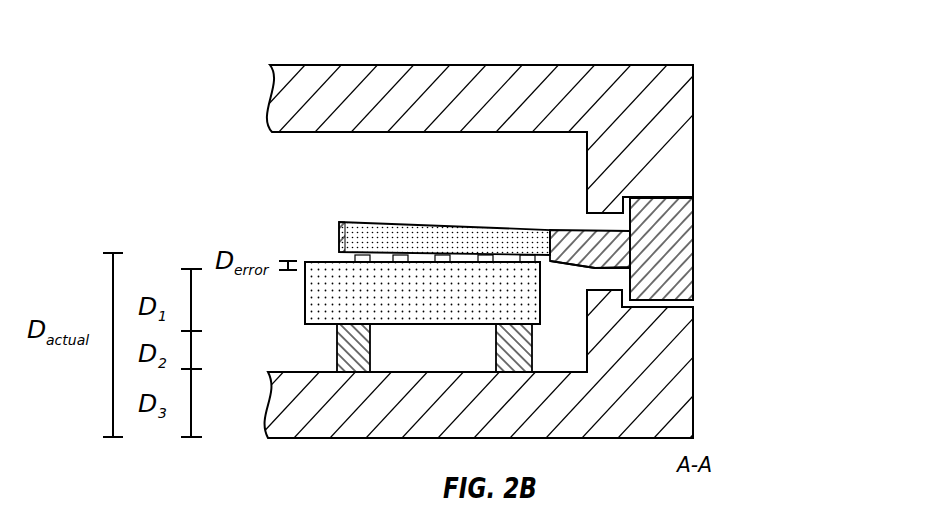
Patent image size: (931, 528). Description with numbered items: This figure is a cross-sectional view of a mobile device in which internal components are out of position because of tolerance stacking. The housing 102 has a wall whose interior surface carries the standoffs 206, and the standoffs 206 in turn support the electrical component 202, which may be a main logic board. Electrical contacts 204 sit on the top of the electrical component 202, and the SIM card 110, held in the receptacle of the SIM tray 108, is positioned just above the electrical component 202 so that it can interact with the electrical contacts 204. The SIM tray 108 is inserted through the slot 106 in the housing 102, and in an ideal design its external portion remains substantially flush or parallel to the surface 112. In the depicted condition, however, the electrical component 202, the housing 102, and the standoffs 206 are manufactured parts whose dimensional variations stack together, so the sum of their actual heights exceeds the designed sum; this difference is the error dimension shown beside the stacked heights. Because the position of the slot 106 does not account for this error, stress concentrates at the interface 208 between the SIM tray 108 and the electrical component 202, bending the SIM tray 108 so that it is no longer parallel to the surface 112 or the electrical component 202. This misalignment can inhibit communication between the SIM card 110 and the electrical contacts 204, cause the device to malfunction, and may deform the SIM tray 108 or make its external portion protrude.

The housing 102 is at (693, 380).
The slot 106 is at (611, 234).
The SIM tray 108 is at (695, 253).
The SIM card 110 is at (531, 240).
The surface 112 is at (701, 111).
The electrical component 202 is at (378, 303).
The electrical contacts 204 is at (350, 258).
The standoffs 206 is at (372, 343).
The interface 208 is at (593, 268).